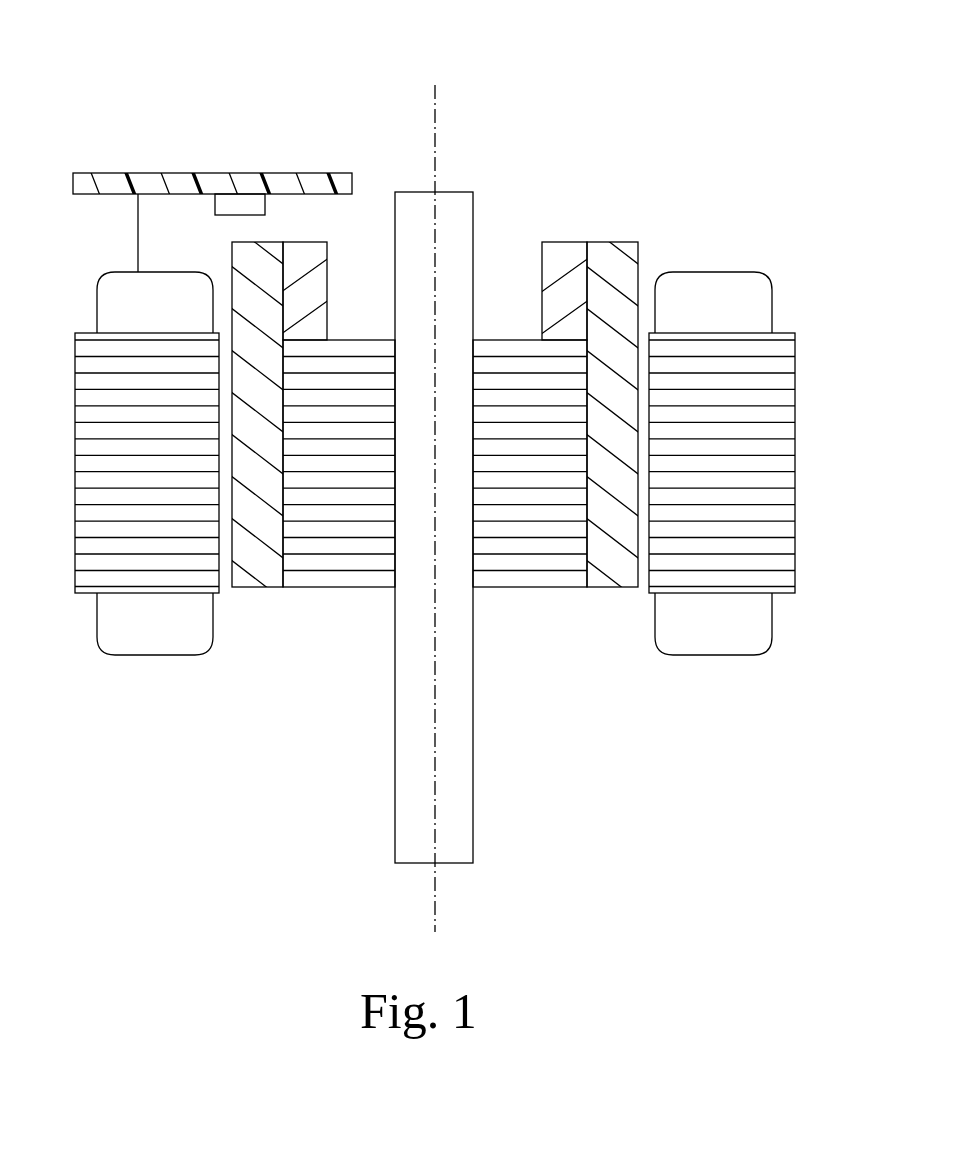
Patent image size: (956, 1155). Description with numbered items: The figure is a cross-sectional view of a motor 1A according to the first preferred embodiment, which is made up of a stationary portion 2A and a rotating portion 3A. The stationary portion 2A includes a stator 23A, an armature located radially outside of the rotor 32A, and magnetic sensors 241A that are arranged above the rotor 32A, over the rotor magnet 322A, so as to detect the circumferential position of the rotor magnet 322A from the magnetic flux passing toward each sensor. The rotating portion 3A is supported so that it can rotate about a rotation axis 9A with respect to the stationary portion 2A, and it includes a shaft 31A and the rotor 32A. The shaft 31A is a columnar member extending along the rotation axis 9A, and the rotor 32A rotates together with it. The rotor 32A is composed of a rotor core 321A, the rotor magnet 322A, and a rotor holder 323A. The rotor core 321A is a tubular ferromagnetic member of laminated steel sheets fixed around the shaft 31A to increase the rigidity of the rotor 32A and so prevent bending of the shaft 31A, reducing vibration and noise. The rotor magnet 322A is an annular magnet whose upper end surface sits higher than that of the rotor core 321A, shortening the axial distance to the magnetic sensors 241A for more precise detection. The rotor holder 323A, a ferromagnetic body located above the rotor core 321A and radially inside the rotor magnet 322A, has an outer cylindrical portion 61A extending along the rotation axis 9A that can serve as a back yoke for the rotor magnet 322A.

The motor 1A is at (688, 118).
The stationary portion 2A is at (124, 145).
The magnetic sensors 241A is at (240, 200).
The rotor holder 323A is at (313, 236).
The rotating portion 3A is at (488, 454).
The outer cylindrical portion 61A is at (557, 262).
The rotor 32A is at (586, 215).
The stator 23A is at (742, 262).
The rotor magnet 322A is at (261, 561).
The rotor core 321A is at (343, 545).
The shaft 31A is at (453, 723).
The rotation axis 9A is at (437, 890).